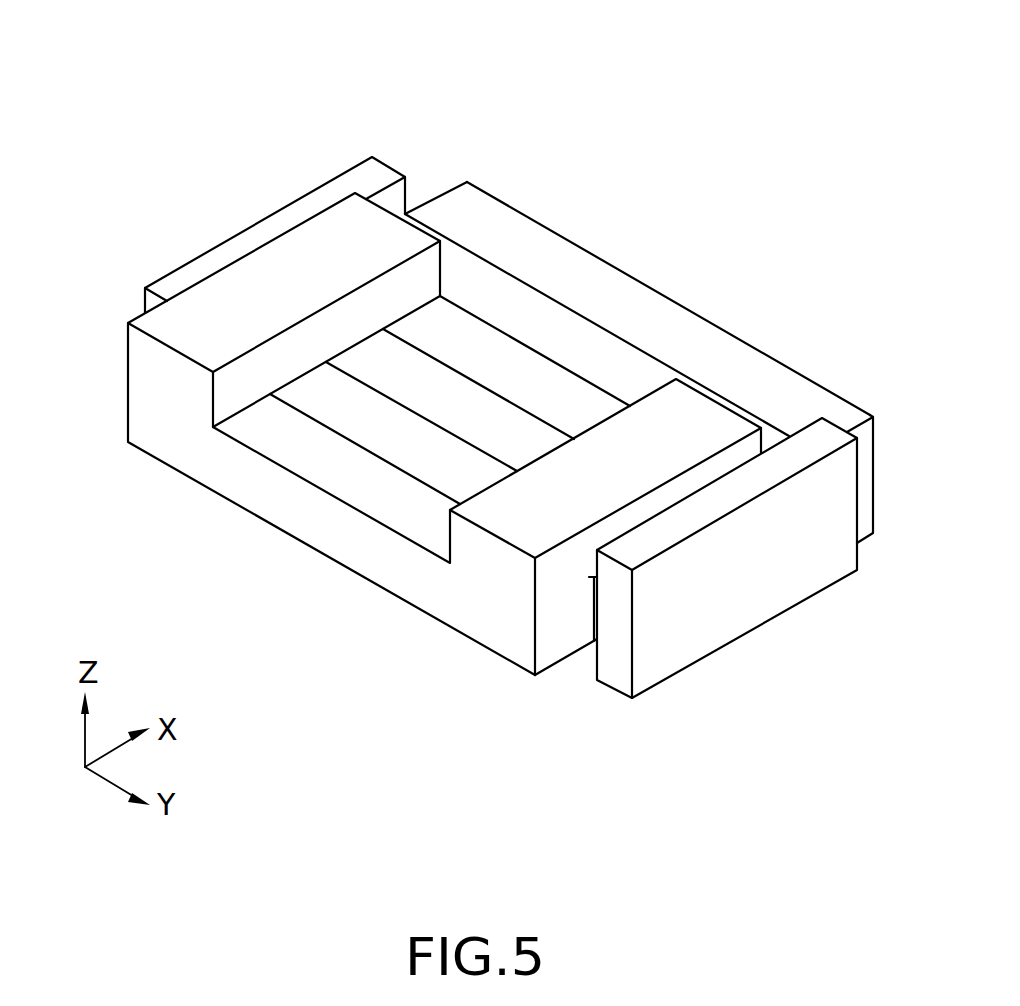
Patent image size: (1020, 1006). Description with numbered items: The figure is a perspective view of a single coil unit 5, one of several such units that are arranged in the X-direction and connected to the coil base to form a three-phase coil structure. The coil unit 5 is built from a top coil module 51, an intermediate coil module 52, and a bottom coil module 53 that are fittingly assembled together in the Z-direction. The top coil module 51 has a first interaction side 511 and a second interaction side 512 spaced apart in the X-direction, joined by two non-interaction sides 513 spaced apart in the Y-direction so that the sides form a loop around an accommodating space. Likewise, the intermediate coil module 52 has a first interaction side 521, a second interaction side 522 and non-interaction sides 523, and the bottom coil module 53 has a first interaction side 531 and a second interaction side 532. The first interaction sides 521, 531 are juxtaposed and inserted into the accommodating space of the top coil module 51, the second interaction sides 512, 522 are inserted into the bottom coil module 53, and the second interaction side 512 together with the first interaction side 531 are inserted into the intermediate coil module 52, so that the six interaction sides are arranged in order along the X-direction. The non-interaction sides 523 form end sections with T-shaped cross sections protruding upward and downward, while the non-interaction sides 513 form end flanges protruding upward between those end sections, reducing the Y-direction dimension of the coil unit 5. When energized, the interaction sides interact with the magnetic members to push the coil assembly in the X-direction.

The coil unit 5 is at (477, 100).
The top coil module 51 is at (128, 382).
The first interaction side 511 is at (283, 440).
The second interaction side 512 is at (530, 367).
The non-interaction side 513 is at (213, 303).
The intermediate coil module 52 is at (237, 233).
The first interaction side 521 is at (377, 422).
The second interaction side 522 is at (630, 367).
The non-interaction side 523 is at (298, 213).
The bottom coil module 53 is at (547, 225).
The first interaction side 531 is at (465, 410).
The second interaction side 532 is at (735, 365).